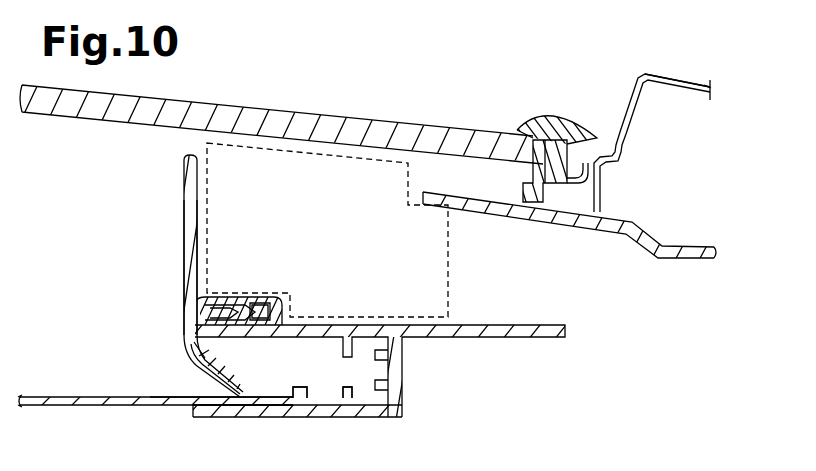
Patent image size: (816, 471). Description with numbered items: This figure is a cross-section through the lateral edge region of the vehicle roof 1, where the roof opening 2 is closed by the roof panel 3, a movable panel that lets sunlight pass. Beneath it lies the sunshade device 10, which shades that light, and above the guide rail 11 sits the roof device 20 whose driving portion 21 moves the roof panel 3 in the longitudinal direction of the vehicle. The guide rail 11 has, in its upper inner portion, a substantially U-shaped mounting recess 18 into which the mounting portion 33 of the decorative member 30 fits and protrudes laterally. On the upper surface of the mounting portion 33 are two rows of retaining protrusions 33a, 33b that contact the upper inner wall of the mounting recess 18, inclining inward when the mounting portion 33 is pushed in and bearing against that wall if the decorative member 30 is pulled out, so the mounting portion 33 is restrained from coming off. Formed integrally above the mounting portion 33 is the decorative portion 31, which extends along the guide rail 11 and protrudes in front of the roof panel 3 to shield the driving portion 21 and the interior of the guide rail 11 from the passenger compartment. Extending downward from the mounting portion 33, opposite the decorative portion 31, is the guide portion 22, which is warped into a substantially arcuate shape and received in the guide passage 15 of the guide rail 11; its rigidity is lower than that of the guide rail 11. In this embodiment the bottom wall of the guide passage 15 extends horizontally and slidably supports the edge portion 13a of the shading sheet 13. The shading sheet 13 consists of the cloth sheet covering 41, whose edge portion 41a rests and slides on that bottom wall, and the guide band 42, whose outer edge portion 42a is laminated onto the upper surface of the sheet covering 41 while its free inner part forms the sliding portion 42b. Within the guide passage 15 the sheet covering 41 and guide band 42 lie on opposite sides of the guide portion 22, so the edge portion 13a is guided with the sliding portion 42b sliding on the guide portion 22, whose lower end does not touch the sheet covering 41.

The roof 1 is at (670, 72).
The roof opening 2 is at (628, 104).
The roof panel 3 is at (372, 119).
The sunshade device 10 is at (69, 213).
The guide rail 11 is at (485, 338).
The shading sheet 13 is at (70, 406).
The edge portion of the shading sheet 13a is at (205, 418).
The guide passage 15 is at (245, 418).
The mounting recess 18 is at (245, 338).
The roof device 20 is at (512, 76).
The driving portion 21 is at (450, 257).
The guide portion 22 is at (186, 357).
The decorative member 30 is at (184, 170).
The decorative portion 31 is at (184, 214).
The mounting portion 33 is at (195, 310).
The retaining protrusion 33a is at (222, 300).
The retaining protrusion 33b is at (258, 300).
The sheet covering 41 is at (172, 406).
The edge portion of the sheet covering 41a is at (320, 418).
The guide band 42 is at (285, 390).
The outer edge portion of the guide band 42a is at (272, 418).
The sliding portion 42b is at (200, 372).